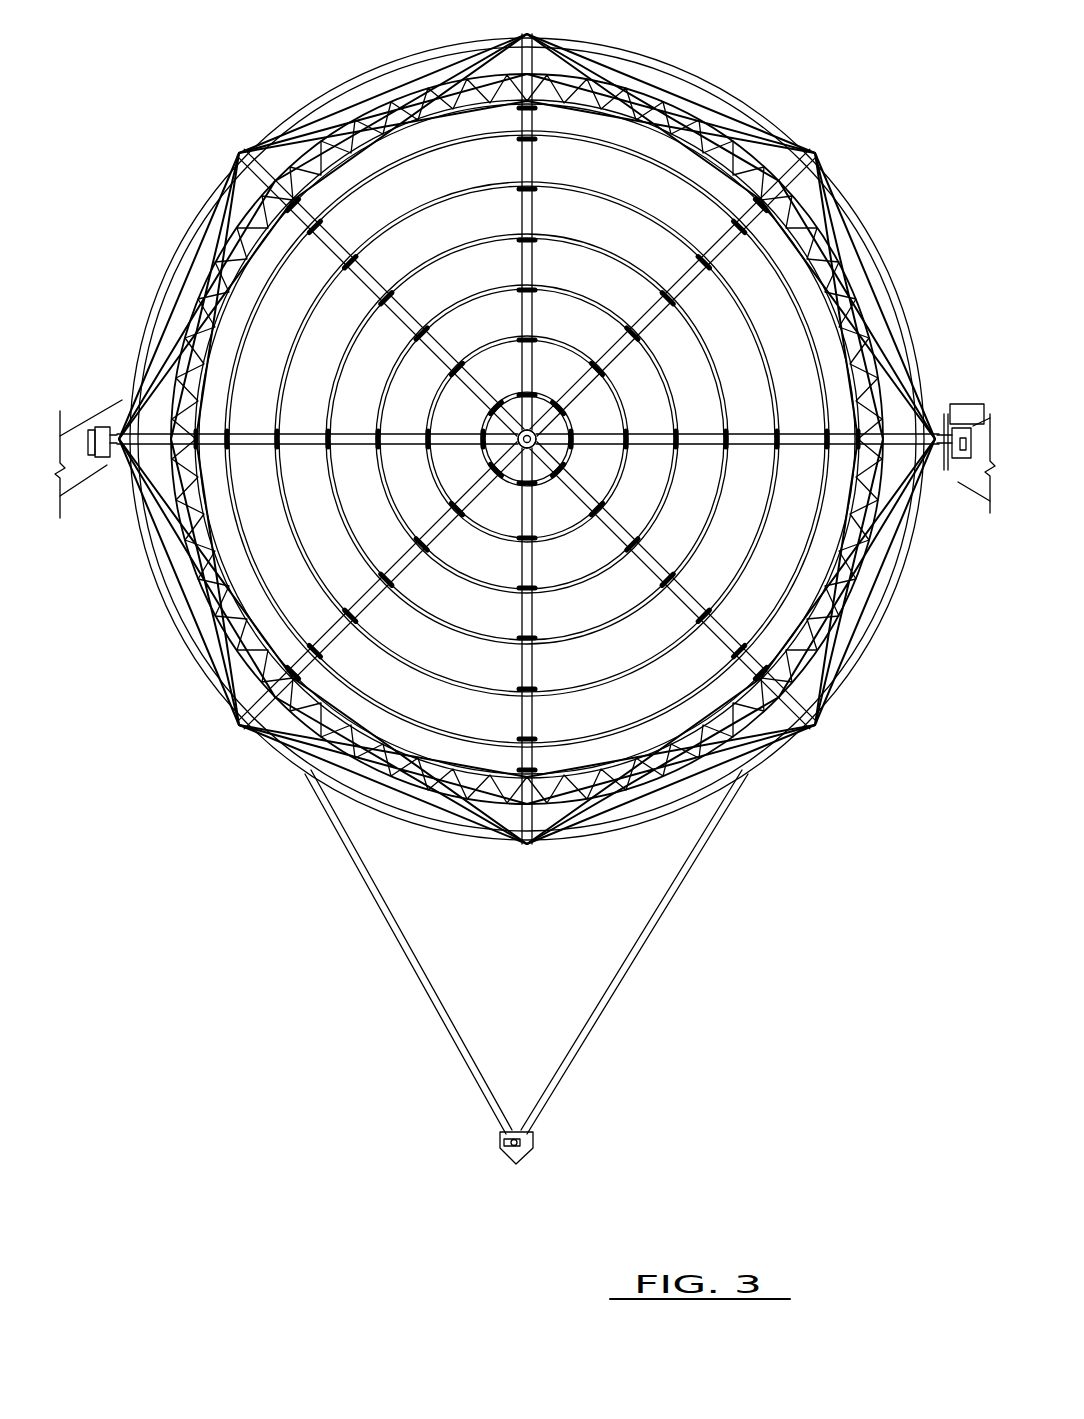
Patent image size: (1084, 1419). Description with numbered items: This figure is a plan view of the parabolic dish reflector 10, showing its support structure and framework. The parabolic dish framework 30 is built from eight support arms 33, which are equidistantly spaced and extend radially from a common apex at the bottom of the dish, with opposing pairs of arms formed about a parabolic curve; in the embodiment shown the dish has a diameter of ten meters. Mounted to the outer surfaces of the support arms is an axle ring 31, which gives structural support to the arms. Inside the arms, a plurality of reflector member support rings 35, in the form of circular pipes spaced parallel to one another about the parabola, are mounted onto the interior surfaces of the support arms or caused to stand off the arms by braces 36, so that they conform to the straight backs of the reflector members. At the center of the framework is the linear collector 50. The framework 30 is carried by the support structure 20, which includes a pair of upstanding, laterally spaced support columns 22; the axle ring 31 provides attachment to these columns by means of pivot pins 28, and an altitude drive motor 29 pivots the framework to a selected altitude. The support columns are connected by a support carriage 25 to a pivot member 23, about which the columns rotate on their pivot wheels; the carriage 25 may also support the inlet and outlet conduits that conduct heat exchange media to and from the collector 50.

The parabolic dish reflector 10 is at (511, 1216).
The support structure 20 is at (676, 908).
The support columns 22 is at (100, 464).
The pivot member 23 is at (524, 1141).
The support carriage 25 is at (407, 930).
The pivot pins 28 is at (108, 421).
The altitude drive motor 29 is at (986, 400).
The parabolic dish framework 30 is at (764, 110).
The axle ring 31 is at (606, 102).
The support arms 33 is at (530, 170).
The reflector member support rings 35 is at (662, 209).
The braces 36 is at (700, 258).
The linear collector 50 is at (537, 435).